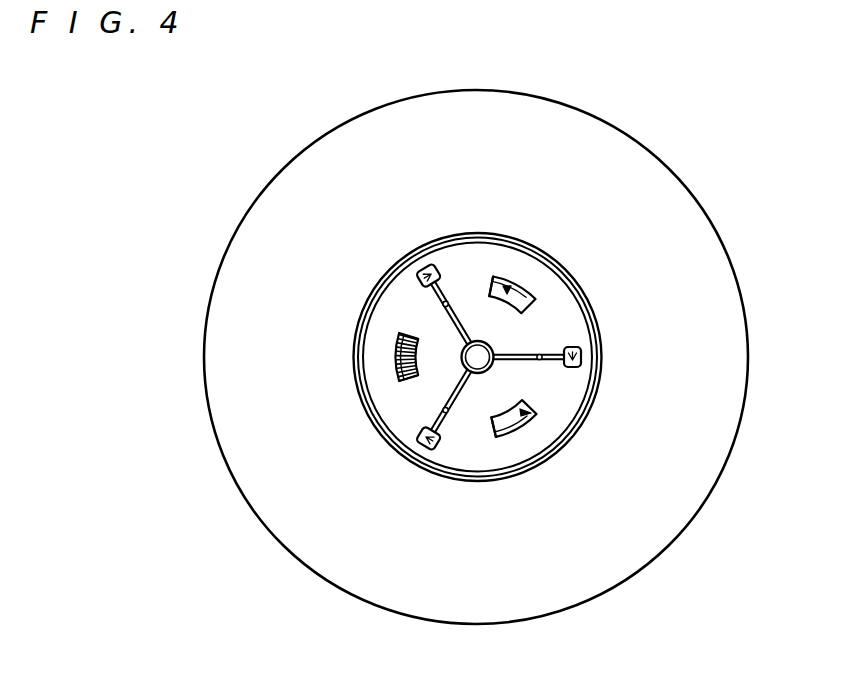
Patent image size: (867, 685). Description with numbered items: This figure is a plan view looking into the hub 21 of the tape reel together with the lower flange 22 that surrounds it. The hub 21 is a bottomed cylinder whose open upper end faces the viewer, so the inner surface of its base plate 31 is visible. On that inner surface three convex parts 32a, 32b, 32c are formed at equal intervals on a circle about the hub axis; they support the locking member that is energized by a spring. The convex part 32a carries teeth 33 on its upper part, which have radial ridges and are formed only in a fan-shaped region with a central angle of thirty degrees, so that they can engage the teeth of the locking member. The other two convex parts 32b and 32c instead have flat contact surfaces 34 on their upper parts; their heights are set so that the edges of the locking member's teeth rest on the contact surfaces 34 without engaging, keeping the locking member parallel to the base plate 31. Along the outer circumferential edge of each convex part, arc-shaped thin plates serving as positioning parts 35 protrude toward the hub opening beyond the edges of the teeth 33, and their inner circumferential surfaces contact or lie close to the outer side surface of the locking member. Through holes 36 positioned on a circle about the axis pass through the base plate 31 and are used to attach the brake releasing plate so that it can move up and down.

The hub 21 is at (527, 222).
The lower flange 22 is at (677, 175).
The base plate 31 is at (457, 283).
The convex part 32a is at (424, 360).
The convex part 32b is at (494, 415).
The convex part 32c is at (515, 316).
The teeth 33 is at (402, 381).
The contact surface 34 is at (510, 280).
The positioning part 35 is at (530, 282).
The through hole 36 is at (424, 268).